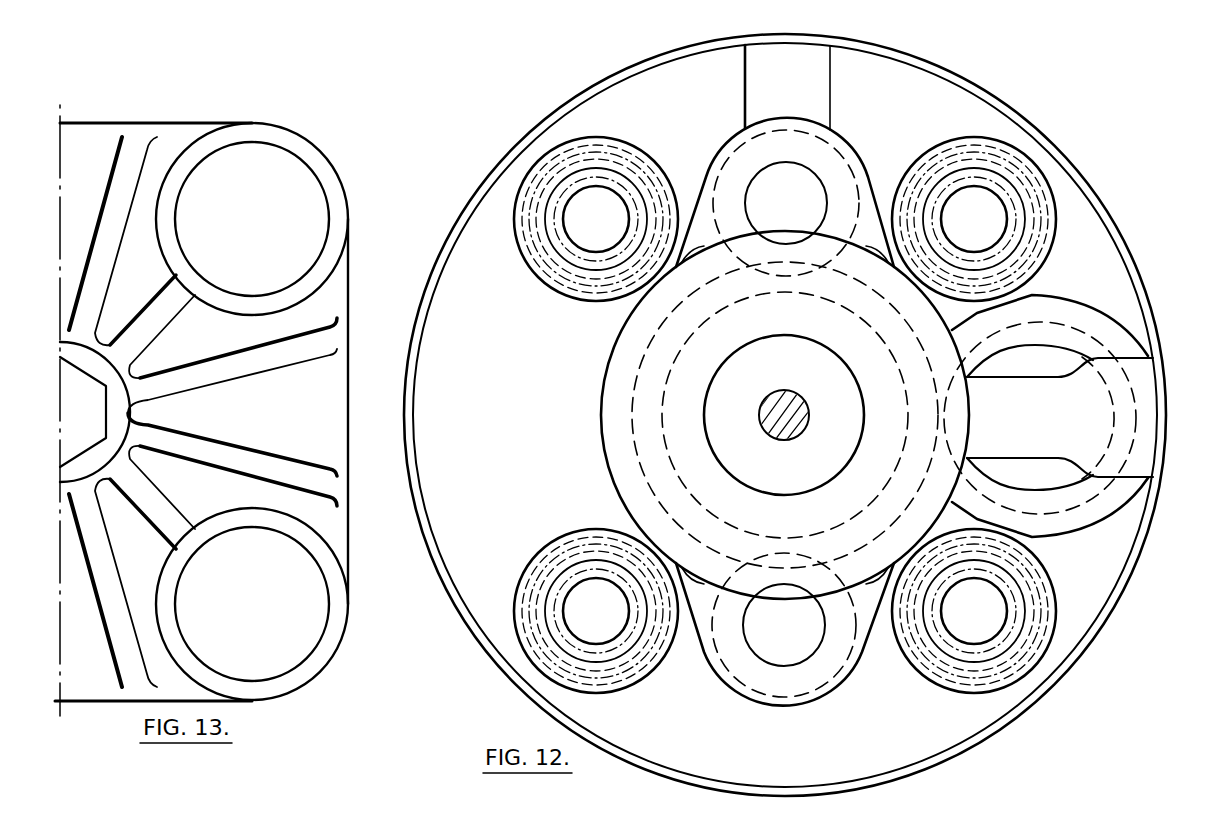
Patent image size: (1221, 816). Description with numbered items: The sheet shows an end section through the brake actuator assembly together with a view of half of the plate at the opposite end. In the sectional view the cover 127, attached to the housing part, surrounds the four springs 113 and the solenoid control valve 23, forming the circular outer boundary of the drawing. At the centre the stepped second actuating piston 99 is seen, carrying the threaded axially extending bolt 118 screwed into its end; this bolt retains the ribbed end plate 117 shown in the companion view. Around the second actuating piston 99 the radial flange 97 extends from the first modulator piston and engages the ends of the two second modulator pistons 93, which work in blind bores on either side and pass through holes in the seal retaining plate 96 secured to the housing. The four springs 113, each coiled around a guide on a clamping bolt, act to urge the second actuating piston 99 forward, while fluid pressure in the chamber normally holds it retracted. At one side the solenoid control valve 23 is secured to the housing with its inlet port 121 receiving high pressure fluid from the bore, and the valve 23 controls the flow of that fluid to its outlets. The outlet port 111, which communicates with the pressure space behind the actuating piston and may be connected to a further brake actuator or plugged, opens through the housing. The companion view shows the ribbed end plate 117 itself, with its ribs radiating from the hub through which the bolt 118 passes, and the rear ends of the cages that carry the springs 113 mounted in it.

In FIG. 12, the solenoid control valve 23 is at (1094, 300).
In FIG. 12, the modulator piston 93 is at (800, 216).
In FIG. 12, the seal retaining plate 96 is at (718, 146).
In FIG. 12, the radial flange 97 is at (603, 416).
In FIG. 12, the second actuating piston 99 is at (801, 377).
In FIG. 12, the outlet port 111 is at (790, 22).
In FIG. 12, the spring 113 is at (556, 272).
In FIG. 13, the ribbed end plate 117 is at (330, 421).
In FIG. 12, the bolt 118 is at (803, 418).
In FIG. 12, the inlet port 121 is at (1166, 443).
In FIG. 12, the cover 127 is at (1112, 608).